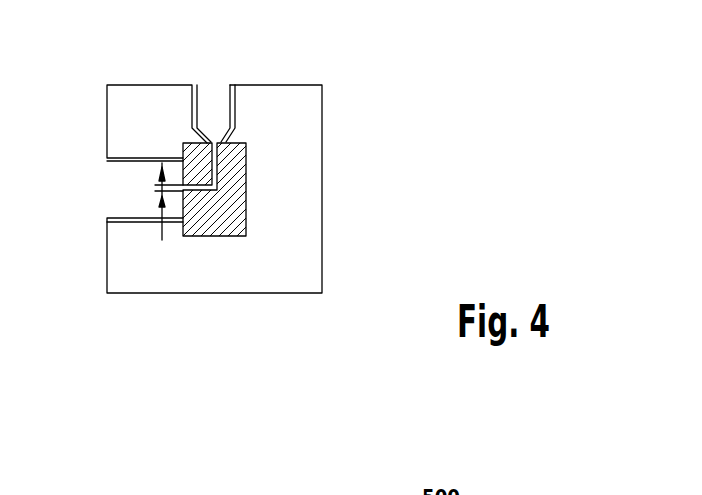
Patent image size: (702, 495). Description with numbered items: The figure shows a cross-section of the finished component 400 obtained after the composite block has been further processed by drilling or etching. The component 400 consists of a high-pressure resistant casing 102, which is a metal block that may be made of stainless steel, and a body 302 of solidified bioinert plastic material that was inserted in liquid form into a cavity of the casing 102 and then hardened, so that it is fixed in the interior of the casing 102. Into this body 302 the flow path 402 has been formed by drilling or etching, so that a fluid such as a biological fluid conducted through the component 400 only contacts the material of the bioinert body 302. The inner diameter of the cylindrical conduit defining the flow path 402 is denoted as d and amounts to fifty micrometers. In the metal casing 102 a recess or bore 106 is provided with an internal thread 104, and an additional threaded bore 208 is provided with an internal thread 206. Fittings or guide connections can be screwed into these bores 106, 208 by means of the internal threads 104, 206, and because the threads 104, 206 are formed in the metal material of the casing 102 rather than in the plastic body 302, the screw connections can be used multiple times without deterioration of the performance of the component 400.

The high-pressure resistant casing 102 is at (120, 112).
The internal thread 104 is at (220, 137).
The recess or bore 106 is at (213, 128).
The internal thread 206 is at (117, 161).
The additional threaded bore 208 is at (145, 208).
The body 302 is at (223, 212).
The flow path 402 is at (213, 164).
The component 400 is at (382, 62).
The inner diameter d is at (160, 233).